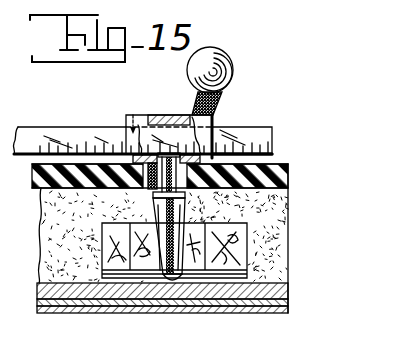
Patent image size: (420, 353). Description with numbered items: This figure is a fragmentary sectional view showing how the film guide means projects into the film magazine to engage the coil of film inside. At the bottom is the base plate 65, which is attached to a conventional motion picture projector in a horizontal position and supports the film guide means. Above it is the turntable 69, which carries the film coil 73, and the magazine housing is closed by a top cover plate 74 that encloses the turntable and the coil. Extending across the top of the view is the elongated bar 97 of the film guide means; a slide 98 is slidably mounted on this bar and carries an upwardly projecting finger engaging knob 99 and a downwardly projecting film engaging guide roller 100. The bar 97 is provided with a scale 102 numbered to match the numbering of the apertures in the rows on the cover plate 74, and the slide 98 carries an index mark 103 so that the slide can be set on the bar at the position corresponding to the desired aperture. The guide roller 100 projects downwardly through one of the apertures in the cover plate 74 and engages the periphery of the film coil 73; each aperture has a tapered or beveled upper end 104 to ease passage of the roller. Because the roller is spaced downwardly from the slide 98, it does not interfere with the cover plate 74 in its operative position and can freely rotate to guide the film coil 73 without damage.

The base plate 65 is at (289, 309).
The turntable 69 is at (287, 290).
The film coil 73 is at (230, 268).
The cover plate 74 is at (288, 166).
The bar 97 is at (57, 127).
The slide 98 is at (171, 115).
The finger engaging knob 99 is at (233, 72).
The film engaging guide roller 100 is at (166, 275).
The scale 102 is at (247, 148).
The index mark 103 is at (133, 115).
The tapered or beveled upper end 104 is at (273, 157).